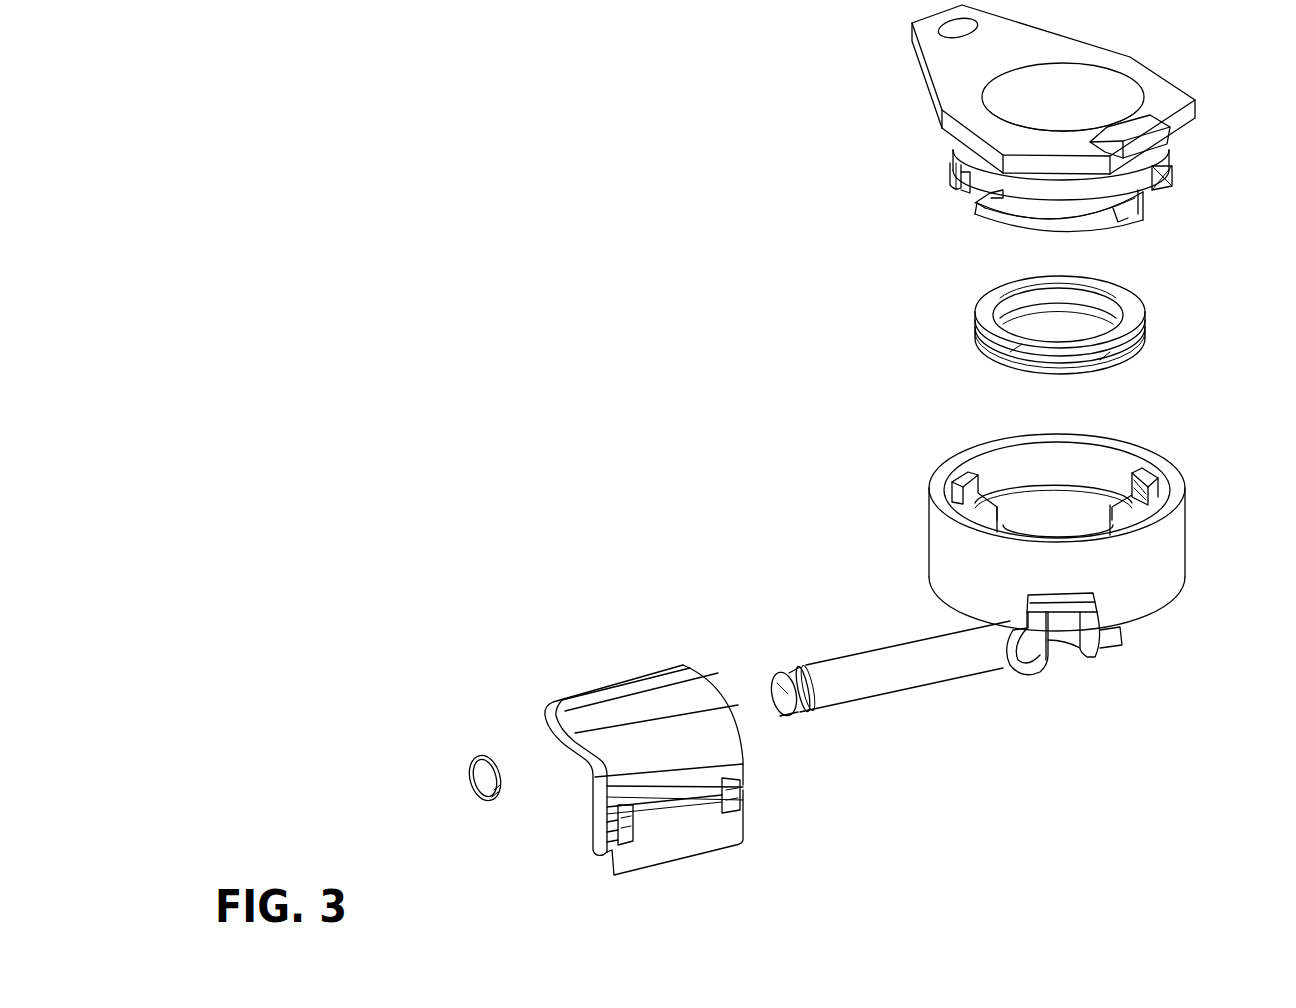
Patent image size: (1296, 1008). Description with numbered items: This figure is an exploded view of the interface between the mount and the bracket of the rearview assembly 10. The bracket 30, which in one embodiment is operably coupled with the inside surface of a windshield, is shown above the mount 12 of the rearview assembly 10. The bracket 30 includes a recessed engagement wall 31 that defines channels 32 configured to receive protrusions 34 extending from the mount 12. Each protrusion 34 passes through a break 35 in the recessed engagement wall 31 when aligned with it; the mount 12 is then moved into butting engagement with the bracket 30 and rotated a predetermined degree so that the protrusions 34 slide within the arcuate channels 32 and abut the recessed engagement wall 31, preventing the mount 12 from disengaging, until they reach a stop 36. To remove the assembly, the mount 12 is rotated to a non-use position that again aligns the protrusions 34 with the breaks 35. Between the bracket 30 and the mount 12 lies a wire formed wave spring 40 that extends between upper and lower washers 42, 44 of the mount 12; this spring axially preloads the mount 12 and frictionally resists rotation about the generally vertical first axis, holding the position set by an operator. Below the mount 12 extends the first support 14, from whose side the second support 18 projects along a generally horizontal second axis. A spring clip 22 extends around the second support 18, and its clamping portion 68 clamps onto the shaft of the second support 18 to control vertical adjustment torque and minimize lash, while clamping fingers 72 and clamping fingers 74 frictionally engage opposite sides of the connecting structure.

The rearview assembly 10 is at (768, 190).
The mount 12 is at (1065, 555).
The first support 14 is at (1110, 645).
The second support 18 is at (779, 690).
The spring clip 22 is at (668, 746).
The bracket 30 is at (1162, 95).
The recessed engagement wall 31 is at (950, 175).
The channels 32 is at (1030, 225).
The protrusions 34 is at (966, 482).
The break 35 is at (975, 205).
The stop 36 is at (1132, 508).
The wire formed wave spring 40 is at (1068, 320).
The upper washer 42 is at (1143, 303).
The lower washer 44 is at (1125, 362).
The clamping portion 68 is at (717, 748).
The clamping fingers 72 is at (597, 818).
The clamping fingers 74 is at (739, 798).